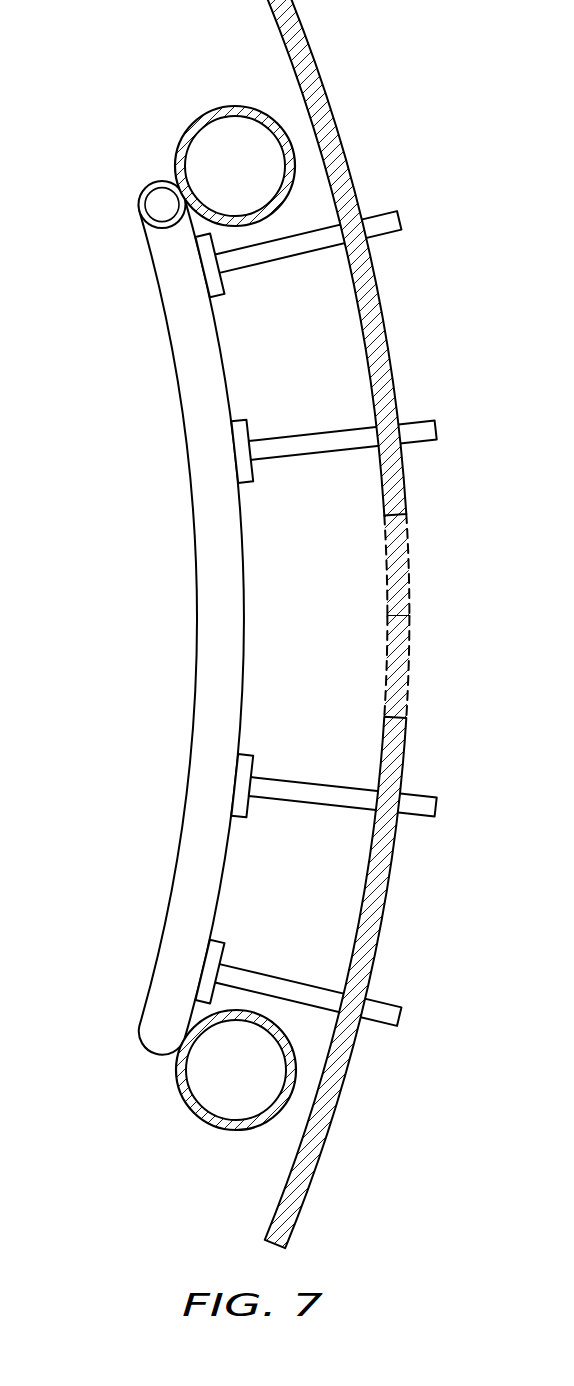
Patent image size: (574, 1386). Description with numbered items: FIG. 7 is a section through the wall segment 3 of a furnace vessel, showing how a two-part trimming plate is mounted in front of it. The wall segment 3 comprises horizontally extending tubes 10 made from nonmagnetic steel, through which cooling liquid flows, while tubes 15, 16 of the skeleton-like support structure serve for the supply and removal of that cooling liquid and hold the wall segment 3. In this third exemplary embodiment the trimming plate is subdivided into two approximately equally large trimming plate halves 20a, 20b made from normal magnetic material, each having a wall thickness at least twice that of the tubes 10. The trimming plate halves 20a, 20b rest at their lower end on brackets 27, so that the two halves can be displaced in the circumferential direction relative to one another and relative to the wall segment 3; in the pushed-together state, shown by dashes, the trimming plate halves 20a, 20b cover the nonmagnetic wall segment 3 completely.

The wall segment 3 is at (254, 624).
The tubes 10 is at (192, 497).
The tube 15 is at (190, 1106).
The tube 16 is at (192, 124).
The trimming plate half 20a is at (322, 1150).
The trimming plate half 20b is at (333, 115).
The brackets 27 is at (270, 262).